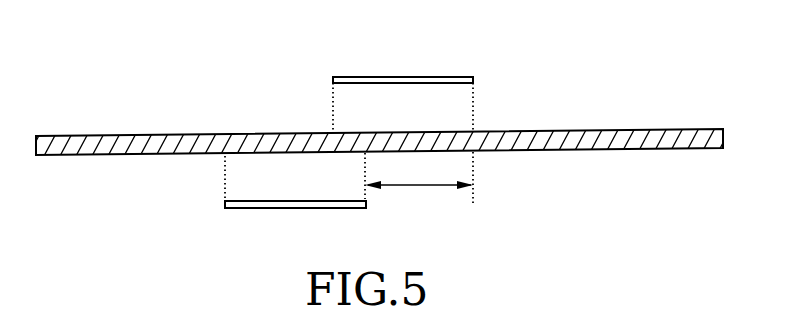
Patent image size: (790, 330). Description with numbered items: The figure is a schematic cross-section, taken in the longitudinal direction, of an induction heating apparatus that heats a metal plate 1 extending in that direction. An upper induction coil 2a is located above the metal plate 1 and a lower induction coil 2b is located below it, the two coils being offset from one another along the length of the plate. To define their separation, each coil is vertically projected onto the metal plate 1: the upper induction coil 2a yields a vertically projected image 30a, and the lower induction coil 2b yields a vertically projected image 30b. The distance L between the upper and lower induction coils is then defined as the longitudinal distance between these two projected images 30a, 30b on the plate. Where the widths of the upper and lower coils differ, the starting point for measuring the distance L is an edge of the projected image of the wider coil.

The metal plate 1 is at (593, 129).
The upper induction coil 2a is at (422, 77).
The lower induction coil 2b is at (253, 208).
The vertically projected image of the upper induction coil 30a is at (372, 132).
The vertically projected image of the lower induction coil 30b is at (257, 155).
The distance between upper and lower induction coils L is at (428, 186).